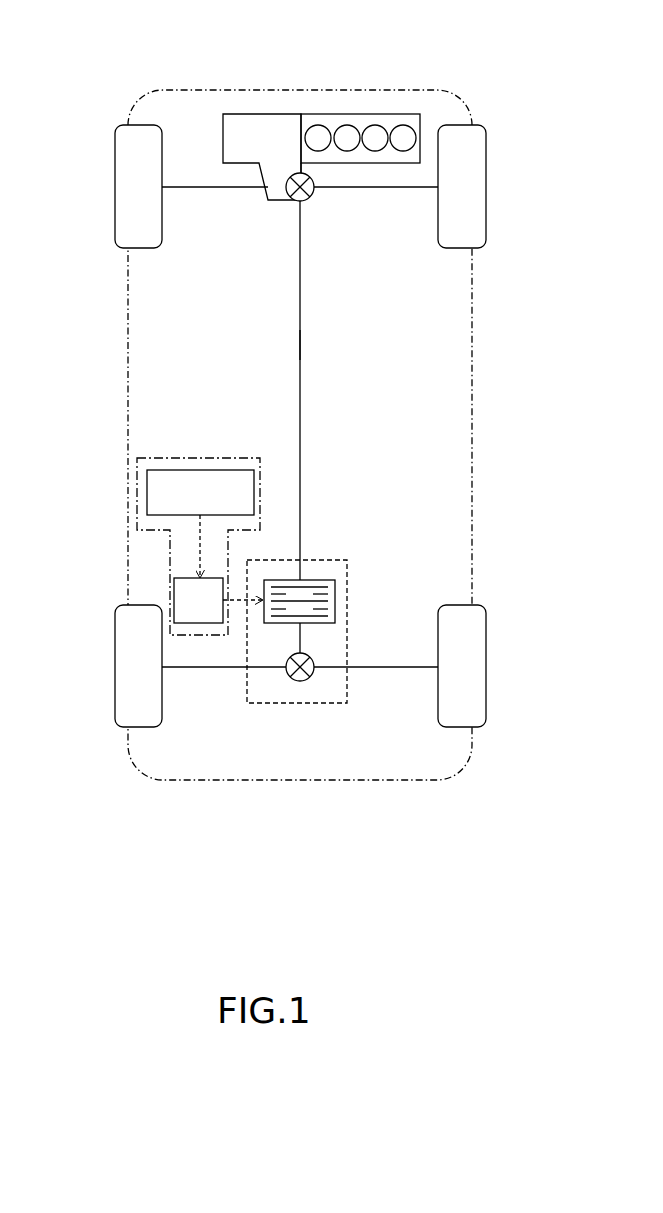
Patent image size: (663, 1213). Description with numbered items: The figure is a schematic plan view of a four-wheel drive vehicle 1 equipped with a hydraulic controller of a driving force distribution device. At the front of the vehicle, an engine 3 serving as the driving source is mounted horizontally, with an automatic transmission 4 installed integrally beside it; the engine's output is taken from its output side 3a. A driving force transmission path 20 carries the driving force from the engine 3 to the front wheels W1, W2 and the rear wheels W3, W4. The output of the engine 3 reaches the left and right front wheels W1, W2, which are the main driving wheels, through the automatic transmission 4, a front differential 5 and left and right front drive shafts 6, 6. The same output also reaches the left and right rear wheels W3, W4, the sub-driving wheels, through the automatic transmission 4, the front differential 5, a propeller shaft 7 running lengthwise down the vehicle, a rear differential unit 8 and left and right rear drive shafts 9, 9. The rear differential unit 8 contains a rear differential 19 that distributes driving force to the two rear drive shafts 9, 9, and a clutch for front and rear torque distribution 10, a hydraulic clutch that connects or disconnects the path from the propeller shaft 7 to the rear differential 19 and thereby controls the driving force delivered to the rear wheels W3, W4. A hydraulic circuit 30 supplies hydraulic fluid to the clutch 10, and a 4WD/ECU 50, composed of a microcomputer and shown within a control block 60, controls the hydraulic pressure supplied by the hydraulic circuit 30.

The four-wheel drive vehicle 1 is at (471, 82).
The engine 3 is at (363, 114).
The engine output shaft 3a is at (308, 166).
The automatic transmission 4 is at (250, 114).
The front differential 5 is at (308, 203).
The front drive shafts 6 is at (238, 192).
The propeller shaft 7 is at (305, 442).
The rear differential unit 8 is at (329, 559).
The rear drive shafts 9 is at (234, 670).
The clutch for front and rear torque distribution 10 is at (338, 598).
The rear differential 19 is at (304, 684).
The driving force transmission path 20 is at (290, 345).
The hydraulic circuit 30 is at (172, 596).
The 4WD/ECU 50 is at (233, 470).
The control unit 60 is at (168, 457).
The front wheel W1 is at (117, 162).
The front wheel W2 is at (487, 165).
The rear wheel W3 is at (117, 658).
The rear wheel W4 is at (487, 658).